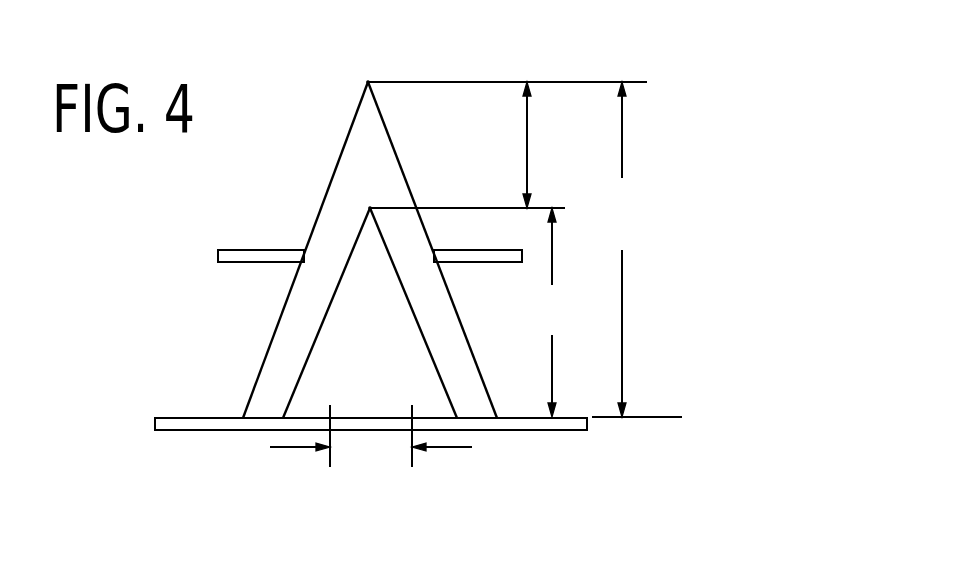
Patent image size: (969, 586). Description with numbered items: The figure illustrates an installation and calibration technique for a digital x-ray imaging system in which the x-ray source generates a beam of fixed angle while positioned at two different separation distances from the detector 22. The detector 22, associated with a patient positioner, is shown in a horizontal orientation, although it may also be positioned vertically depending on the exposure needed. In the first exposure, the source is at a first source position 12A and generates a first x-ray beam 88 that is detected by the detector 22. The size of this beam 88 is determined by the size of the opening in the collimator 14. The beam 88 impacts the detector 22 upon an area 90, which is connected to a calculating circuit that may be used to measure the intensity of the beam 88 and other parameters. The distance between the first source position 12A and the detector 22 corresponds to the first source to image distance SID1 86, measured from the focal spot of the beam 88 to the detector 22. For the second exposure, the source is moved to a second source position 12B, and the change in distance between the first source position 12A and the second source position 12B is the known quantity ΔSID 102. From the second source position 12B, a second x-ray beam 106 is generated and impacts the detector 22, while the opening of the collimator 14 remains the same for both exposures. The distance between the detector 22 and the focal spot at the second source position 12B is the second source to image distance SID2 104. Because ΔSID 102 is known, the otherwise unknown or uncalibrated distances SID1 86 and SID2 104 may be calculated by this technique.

The first source position 12A is at (366, 80).
The second source position 12B is at (367, 205).
The collimator 14 is at (305, 248).
The detector 22 is at (182, 417).
The first source to image distance SID1 86 is at (648, 197).
The first x-ray beam 88 is at (390, 132).
The area 90 is at (372, 470).
The change in distance ΔSID 102 is at (557, 137).
The second source to image distance SID2 104 is at (577, 290).
The second x-ray beam 106 is at (303, 372).